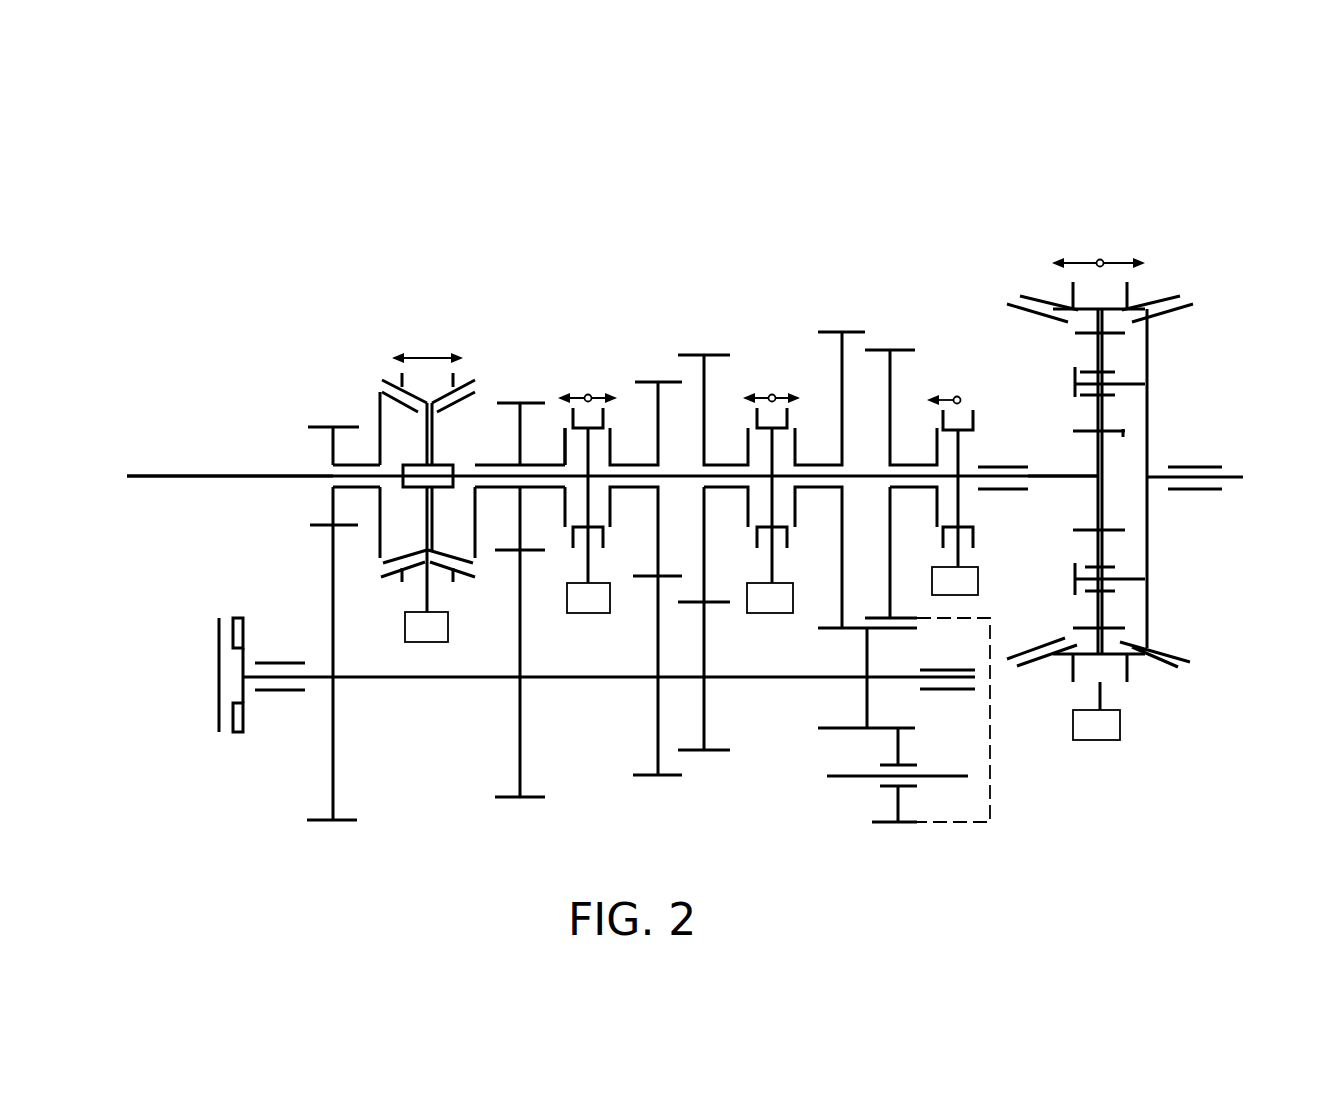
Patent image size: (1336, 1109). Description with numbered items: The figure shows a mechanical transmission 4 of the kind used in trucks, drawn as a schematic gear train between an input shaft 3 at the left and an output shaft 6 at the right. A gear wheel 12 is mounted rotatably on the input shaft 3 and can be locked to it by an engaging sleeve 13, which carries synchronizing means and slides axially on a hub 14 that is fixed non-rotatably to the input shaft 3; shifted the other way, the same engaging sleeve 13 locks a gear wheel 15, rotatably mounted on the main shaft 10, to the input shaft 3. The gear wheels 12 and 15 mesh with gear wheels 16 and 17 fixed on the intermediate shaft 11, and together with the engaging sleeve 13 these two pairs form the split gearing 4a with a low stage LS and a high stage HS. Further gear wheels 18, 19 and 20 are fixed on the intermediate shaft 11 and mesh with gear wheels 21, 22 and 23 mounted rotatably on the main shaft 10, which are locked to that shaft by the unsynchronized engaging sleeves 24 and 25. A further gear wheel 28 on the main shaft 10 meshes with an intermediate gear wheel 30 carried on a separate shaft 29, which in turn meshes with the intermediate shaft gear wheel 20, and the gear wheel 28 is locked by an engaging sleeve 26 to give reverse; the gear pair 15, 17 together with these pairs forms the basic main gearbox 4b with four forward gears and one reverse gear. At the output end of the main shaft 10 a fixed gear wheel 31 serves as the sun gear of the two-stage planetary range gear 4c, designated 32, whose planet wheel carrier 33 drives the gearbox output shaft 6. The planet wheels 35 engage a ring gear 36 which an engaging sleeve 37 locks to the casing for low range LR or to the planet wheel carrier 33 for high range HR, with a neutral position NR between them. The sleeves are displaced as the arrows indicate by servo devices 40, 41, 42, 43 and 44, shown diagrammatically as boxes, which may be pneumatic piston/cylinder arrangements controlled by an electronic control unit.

The input shaft 3 is at (127, 476).
The mechanical transmission 4 is at (278, 160).
The split gearing 4a is at (435, 292).
The basic main gearbox 4b is at (972, 198).
The two-stage range gear 4c is at (1093, 196).
The output shaft 6 is at (1243, 477).
The main shaft 10 is at (1070, 477).
The intermediate shaft 11 is at (393, 678).
The gear wheel 12 is at (320, 427).
The engaging sleeve 13 is at (476, 378).
The hub 14 is at (430, 438).
The gear wheel 15 is at (512, 403).
The gear wheel 16 is at (333, 792).
The gear wheel 17 is at (520, 765).
The gear wheel 18 is at (658, 737).
The gear wheel 19 is at (707, 723).
The gear wheel 20 is at (840, 730).
The gear wheel 21 is at (646, 382).
The gear wheel 22 is at (696, 355).
The gear wheel 23 is at (831, 332).
The engaging sleeve 24 is at (605, 415).
The engaging sleeve 25 is at (788, 417).
The engaging sleeve 26 is at (975, 420).
The gear wheel 28 is at (878, 350).
The separate shaft 29 is at (842, 775).
The intermediate gear wheel 30 is at (903, 747).
The gear wheel 31 is at (1082, 531).
The range gear 32 is at (1178, 249).
The planet wheel carrier 33 is at (1147, 357).
The planet wheels 35 is at (1125, 445).
The ring gear 36 is at (1110, 628).
The engaging sleeve 37 is at (1127, 297).
The servo device 40 is at (426, 596).
The servo device 41 is at (588, 520).
The servo device 42 is at (770, 520).
The servo device 43 is at (955, 513).
The servo device 44 is at (1096, 711).